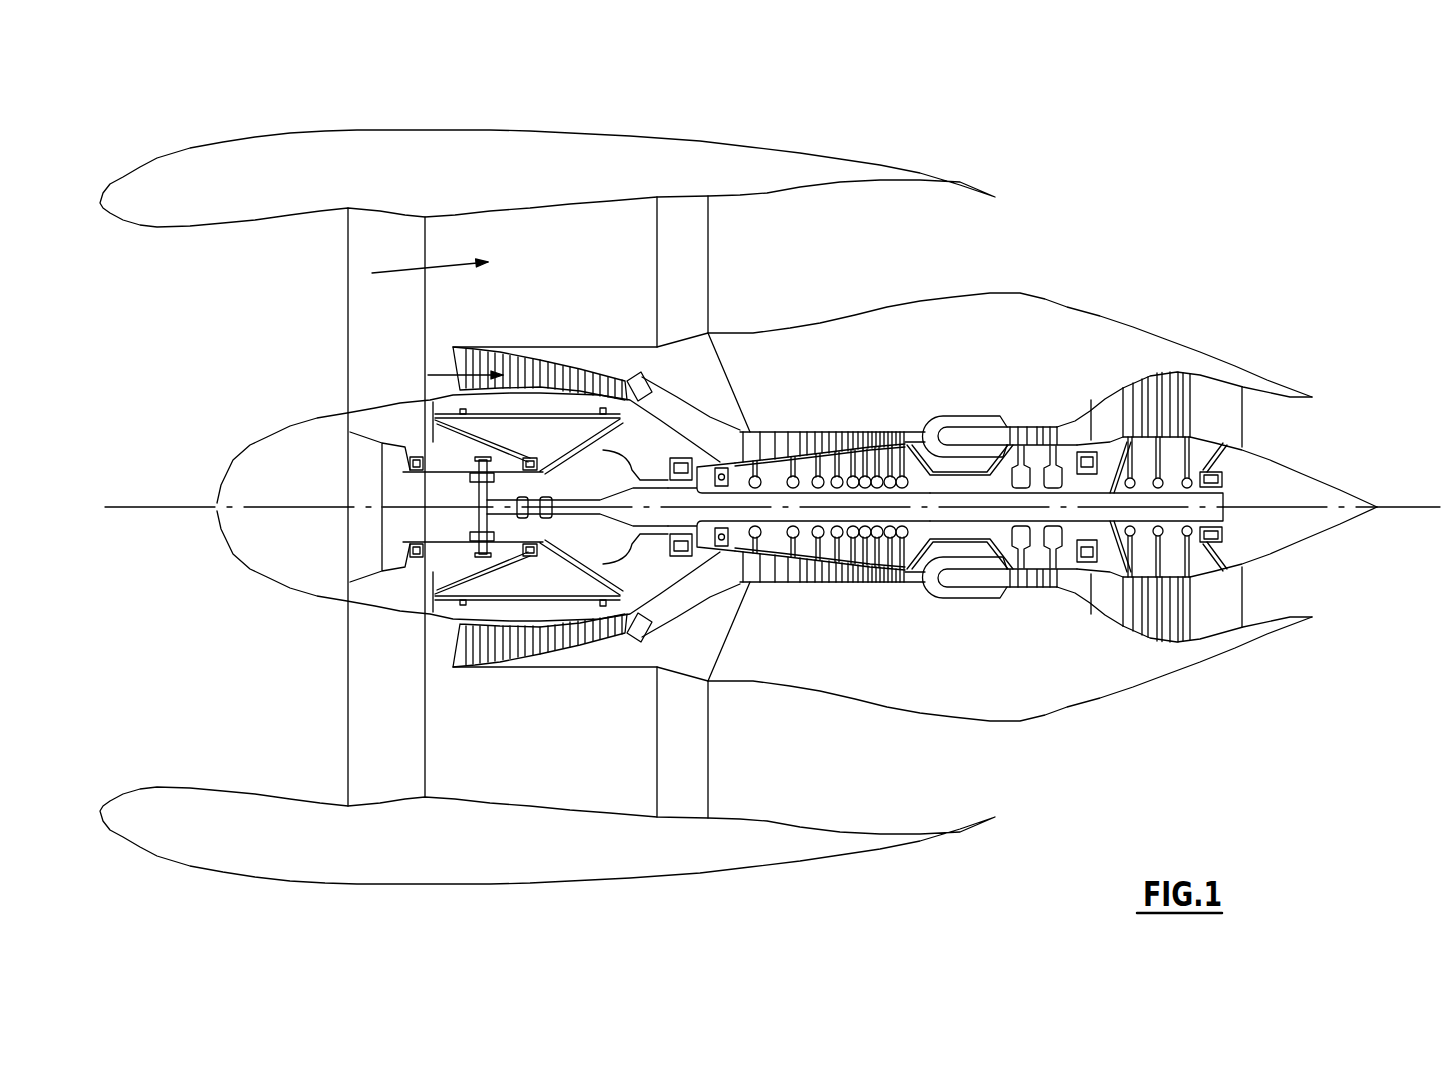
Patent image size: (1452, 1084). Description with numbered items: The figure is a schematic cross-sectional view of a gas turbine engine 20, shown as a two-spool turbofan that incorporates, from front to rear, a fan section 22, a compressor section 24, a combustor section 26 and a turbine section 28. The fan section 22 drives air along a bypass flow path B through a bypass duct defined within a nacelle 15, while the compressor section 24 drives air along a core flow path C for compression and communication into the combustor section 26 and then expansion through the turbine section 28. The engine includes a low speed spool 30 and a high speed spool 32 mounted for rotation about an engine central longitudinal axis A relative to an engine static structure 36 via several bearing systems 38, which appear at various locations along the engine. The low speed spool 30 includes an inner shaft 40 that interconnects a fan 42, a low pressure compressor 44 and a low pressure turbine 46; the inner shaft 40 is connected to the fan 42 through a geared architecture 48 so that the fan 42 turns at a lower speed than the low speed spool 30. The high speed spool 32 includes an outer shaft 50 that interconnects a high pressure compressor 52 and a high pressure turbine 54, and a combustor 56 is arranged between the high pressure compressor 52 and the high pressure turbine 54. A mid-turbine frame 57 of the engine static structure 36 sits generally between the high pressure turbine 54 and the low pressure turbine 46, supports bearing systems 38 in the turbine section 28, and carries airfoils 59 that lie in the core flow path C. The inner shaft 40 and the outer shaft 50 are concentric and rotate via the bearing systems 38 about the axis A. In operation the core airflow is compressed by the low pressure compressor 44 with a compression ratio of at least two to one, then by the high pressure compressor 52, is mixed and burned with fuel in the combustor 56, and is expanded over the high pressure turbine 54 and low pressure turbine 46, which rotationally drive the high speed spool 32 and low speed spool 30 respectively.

The nacelle 15 is at (560, 157).
The gas turbine engine 20 is at (1068, 205).
The fan section 22 is at (257, 343).
The compressor section 24 is at (774, 310).
The combustor section 26 is at (970, 390).
The turbine section 28 is at (1077, 627).
The low speed spool 30 is at (645, 527).
The high speed spool 32 is at (928, 428).
The engine static structure 36 is at (773, 583).
The bearing systems 38 is at (726, 432).
The inner shaft 40 is at (637, 488).
The fan 42 is at (402, 326).
The low pressure compressor 44 is at (563, 352).
The low pressure turbine 46 is at (1192, 360).
The geared architecture 48 is at (470, 498).
The outer shaft 50 is at (922, 572).
The high pressure compressor 52 is at (817, 418).
The high pressure turbine 54 is at (1042, 417).
The combustor 56 is at (967, 437).
The mid-turbine frame 57 is at (1097, 423).
The airfoils 59 is at (1092, 430).
The engine central longitudinal axis A is at (1405, 507).
The bypass flow path B is at (407, 265).
The core flow path C is at (447, 373).